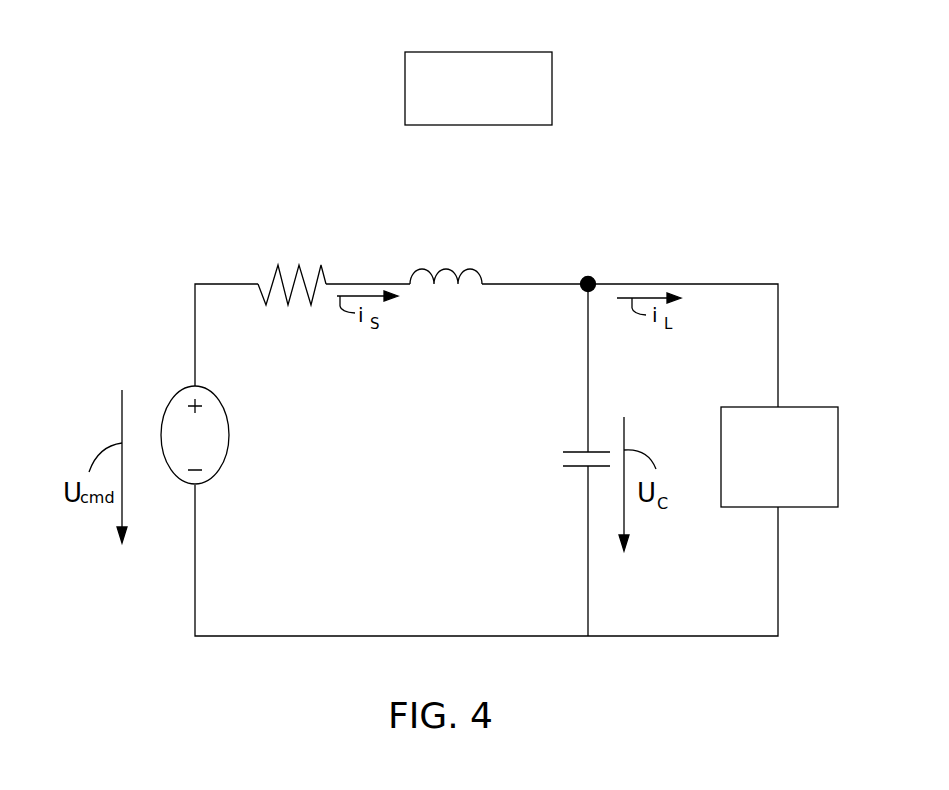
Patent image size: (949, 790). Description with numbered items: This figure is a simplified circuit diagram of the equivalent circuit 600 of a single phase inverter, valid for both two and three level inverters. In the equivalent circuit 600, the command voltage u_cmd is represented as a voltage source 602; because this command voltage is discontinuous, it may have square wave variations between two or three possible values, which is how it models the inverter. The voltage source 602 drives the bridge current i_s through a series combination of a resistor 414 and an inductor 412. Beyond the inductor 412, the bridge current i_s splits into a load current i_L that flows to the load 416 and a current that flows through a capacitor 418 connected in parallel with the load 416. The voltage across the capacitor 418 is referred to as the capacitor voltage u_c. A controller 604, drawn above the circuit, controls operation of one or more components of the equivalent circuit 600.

The equivalent circuit 600 is at (800, 88).
The controller 604 is at (552, 88).
The voltage source 602 is at (229, 436).
The resistor 414 is at (299, 264).
The inductor 412 is at (447, 269).
The capacitor 418 is at (571, 451).
The load 416 is at (838, 458).